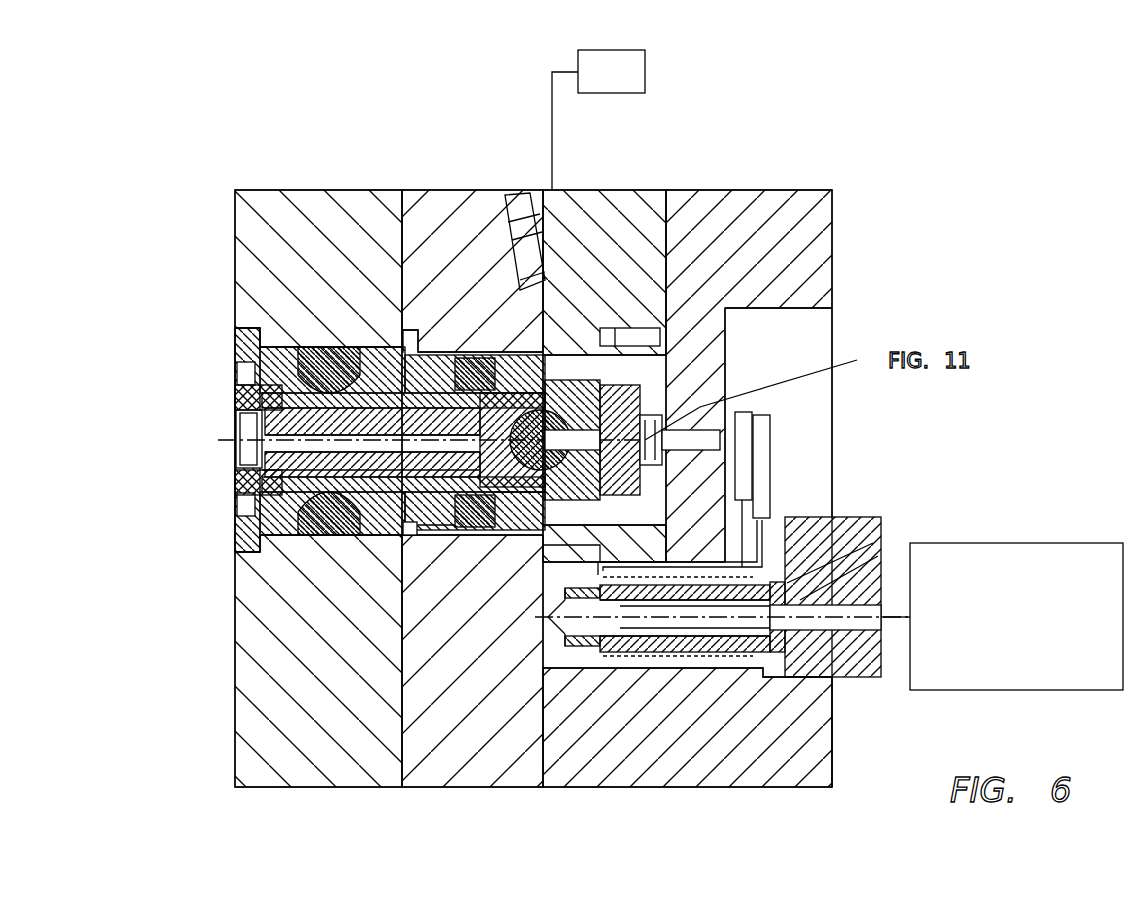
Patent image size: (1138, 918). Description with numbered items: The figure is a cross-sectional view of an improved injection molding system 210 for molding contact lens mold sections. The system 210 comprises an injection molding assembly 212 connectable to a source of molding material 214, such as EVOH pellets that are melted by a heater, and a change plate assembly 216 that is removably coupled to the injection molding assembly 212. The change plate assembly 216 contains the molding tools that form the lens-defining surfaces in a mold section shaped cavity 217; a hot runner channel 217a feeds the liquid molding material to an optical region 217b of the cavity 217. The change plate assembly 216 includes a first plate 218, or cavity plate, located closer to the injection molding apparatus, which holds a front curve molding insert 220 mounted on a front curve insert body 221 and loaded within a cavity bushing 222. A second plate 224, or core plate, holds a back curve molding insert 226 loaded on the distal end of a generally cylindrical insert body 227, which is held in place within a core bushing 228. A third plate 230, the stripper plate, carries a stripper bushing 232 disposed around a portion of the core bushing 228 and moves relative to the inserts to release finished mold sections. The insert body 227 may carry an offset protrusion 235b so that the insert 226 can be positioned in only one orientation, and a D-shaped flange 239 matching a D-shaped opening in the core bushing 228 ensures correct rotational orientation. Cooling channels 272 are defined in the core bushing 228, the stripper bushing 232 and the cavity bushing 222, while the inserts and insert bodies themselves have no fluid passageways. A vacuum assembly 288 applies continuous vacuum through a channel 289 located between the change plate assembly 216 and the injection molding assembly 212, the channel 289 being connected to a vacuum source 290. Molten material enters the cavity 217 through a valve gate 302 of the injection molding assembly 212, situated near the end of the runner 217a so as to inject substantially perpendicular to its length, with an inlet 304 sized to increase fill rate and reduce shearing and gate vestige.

The injection molding system 210 is at (822, 186).
The injection molding assembly 212 is at (756, 186).
The source of molding material 214 is at (1018, 631).
The change plate assembly 216 is at (425, 156).
The mold section shaped cavity 217 is at (497, 347).
The hot runner channel 217a is at (545, 600).
The optical region 217b is at (510, 495).
The first plate 218 is at (646, 186).
The front curve molding insert 220 is at (645, 378).
The front curve insert body 221 is at (625, 405).
The cavity bushing 222 is at (563, 363).
The second plate 224 is at (290, 186).
The back curve molding insert 226 is at (430, 520).
The insert body 227 is at (362, 347).
The core bushing 228 is at (248, 336).
The stripper plate 230 is at (413, 186).
The stripper bushing 232 is at (403, 527).
The offset protrusion 235b is at (480, 463).
The D-shaped flange 239 is at (245, 398).
The channels 272 is at (310, 347).
The vacuum assembly 288 is at (668, 82).
The channel 289 is at (522, 232).
The vacuum source 290 is at (616, 86).
The valve gate 302 is at (585, 625).
The inlet 304 is at (560, 624).